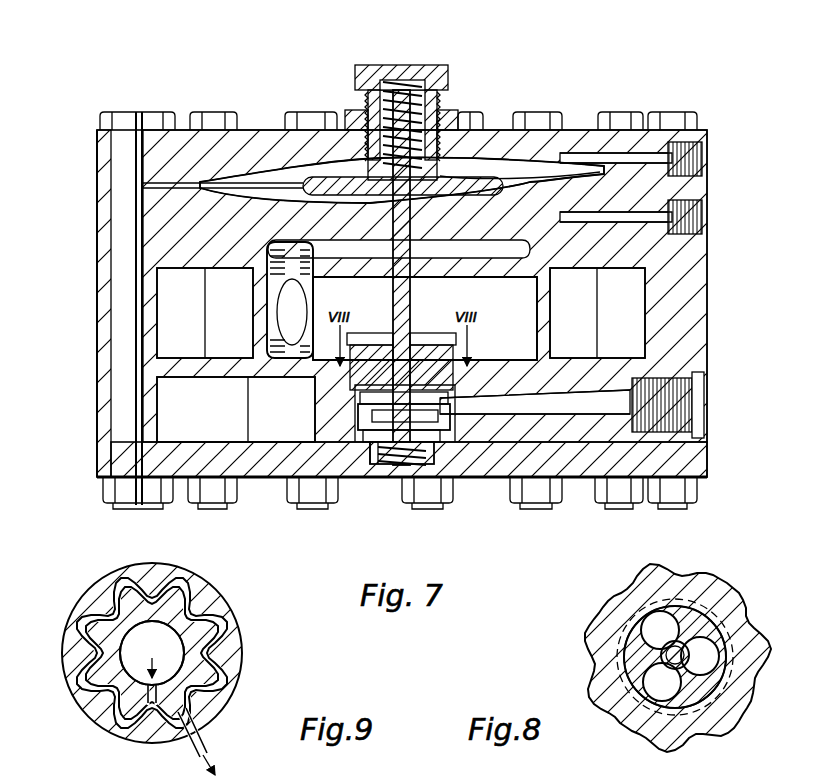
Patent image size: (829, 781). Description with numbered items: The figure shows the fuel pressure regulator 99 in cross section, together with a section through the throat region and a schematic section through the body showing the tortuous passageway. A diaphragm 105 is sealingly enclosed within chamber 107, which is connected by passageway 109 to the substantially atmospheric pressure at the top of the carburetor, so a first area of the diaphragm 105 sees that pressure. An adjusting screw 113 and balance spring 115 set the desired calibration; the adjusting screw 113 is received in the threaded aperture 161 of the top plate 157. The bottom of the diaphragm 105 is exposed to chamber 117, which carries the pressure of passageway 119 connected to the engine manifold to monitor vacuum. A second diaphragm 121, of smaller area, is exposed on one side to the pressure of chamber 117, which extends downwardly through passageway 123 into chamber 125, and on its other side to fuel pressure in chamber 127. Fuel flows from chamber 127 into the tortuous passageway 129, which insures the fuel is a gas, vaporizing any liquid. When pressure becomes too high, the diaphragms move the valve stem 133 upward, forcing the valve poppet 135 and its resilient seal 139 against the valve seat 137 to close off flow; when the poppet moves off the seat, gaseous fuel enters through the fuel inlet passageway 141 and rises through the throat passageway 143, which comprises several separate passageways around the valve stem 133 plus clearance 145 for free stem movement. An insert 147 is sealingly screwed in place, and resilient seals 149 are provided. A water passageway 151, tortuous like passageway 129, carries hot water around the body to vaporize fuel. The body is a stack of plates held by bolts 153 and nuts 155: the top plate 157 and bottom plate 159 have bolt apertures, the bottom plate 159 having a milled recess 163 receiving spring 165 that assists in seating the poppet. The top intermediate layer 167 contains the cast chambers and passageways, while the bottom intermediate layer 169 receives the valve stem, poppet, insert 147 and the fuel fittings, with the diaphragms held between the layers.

In FIG. 7, the fuel pressure regulator 99 is at (142, 103).
In FIG. 7, the diaphragm 105 is at (548, 195).
In FIG. 7, the chamber 107 is at (470, 178).
In FIG. 7, the passageway 109 is at (690, 160).
In FIG. 7, the adjusting screw 113 is at (378, 65).
In FIG. 7, the balance spring 115 is at (410, 88).
In FIG. 7, the chamber 117 is at (228, 206).
In FIG. 7, the passageway 119 is at (690, 222).
In FIG. 7, the second diaphragm 121 is at (535, 358).
In FIG. 7, the passageway 123 is at (428, 246).
In FIG. 7, the chamber 125 is at (565, 255).
In FIG. 7, the chamber 127 is at (510, 355).
In FIG. 9, the chamber 127 is at (175, 658).
In FIG. 9, the tortuous passageway 129 is at (190, 600).
In FIG. 7, the valve stem 133 is at (282, 290).
In FIG. 8, the valve stem 133 is at (640, 638).
In FIG. 7, the valve poppet 135 is at (358, 425).
In FIG. 7, the valve seat 137 is at (360, 409).
In FIG. 7, the resilient seal 139 is at (428, 448).
In FIG. 7, the fuel inlet passageway 141 is at (680, 409).
In FIG. 7, the throat passageway 143 is at (416, 342).
In FIG. 8, the throat passageway 143 is at (655, 680).
In FIG. 8, the clearance 145 is at (660, 655).
In FIG. 7, the insert 147 is at (388, 333).
In FIG. 8, the insert 147 is at (695, 625).
In FIG. 7, the resilient seals 149 is at (440, 458).
In FIG. 7, the water passageway 151 is at (205, 420).
In FIG. 7, the bolts 153 is at (122, 162).
In FIG. 7, the nuts 155 is at (108, 488).
In FIG. 7, the top plate 157 is at (243, 135).
In FIG. 7, the bottom plate 159 is at (270, 480).
In FIG. 7, the threaded aperture 161 is at (365, 115).
In FIG. 7, the recess 163 is at (382, 455).
In FIG. 7, the spring 165 is at (402, 448).
In FIG. 7, the top intermediate layer 167 is at (112, 228).
In FIG. 7, the bottom intermediate layer 169 is at (100, 354).